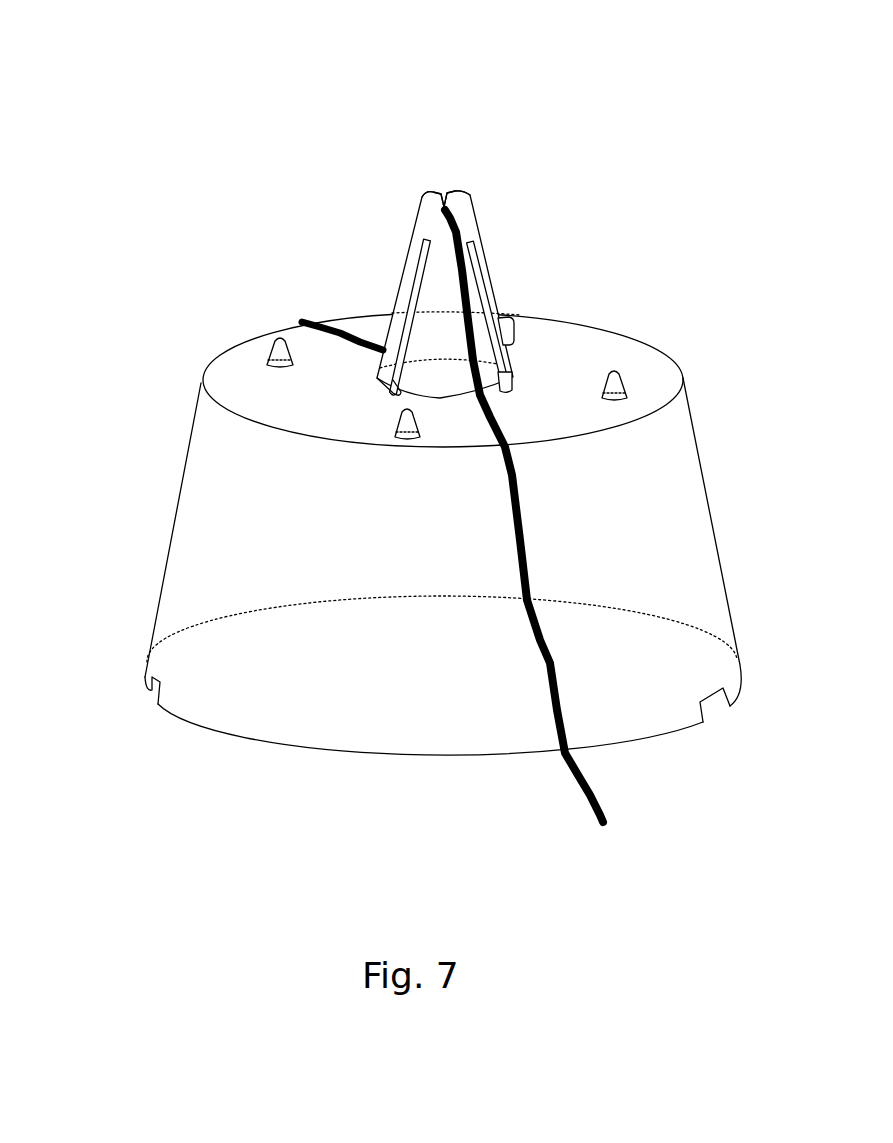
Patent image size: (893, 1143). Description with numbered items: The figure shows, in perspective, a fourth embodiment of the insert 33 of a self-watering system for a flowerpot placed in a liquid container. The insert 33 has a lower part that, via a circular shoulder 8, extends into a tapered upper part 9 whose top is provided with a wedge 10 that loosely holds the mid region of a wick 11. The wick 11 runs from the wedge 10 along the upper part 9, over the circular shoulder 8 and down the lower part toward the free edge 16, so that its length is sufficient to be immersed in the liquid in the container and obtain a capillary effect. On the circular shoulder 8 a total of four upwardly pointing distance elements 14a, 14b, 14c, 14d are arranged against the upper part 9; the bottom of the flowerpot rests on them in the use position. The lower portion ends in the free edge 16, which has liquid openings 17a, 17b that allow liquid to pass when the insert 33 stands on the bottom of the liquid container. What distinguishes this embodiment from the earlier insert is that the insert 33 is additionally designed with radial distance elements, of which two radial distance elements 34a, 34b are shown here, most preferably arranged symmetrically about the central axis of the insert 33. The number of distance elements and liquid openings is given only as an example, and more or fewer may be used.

The insert 33 is at (213, 172).
The circular shoulder 8 is at (588, 353).
The tapered upper part 9 is at (431, 308).
The wedge 10 is at (428, 193).
The wick 11 is at (593, 798).
The distance element 14a is at (268, 354).
The distance element 14b is at (407, 440).
The distance element 14c is at (624, 383).
The distance element 14d is at (513, 330).
The free edge 16 is at (222, 735).
The liquid opening 17a is at (157, 692).
The liquid opening 17b is at (712, 708).
The radial distance element 34a is at (386, 383).
The radial distance element 34b is at (505, 353).